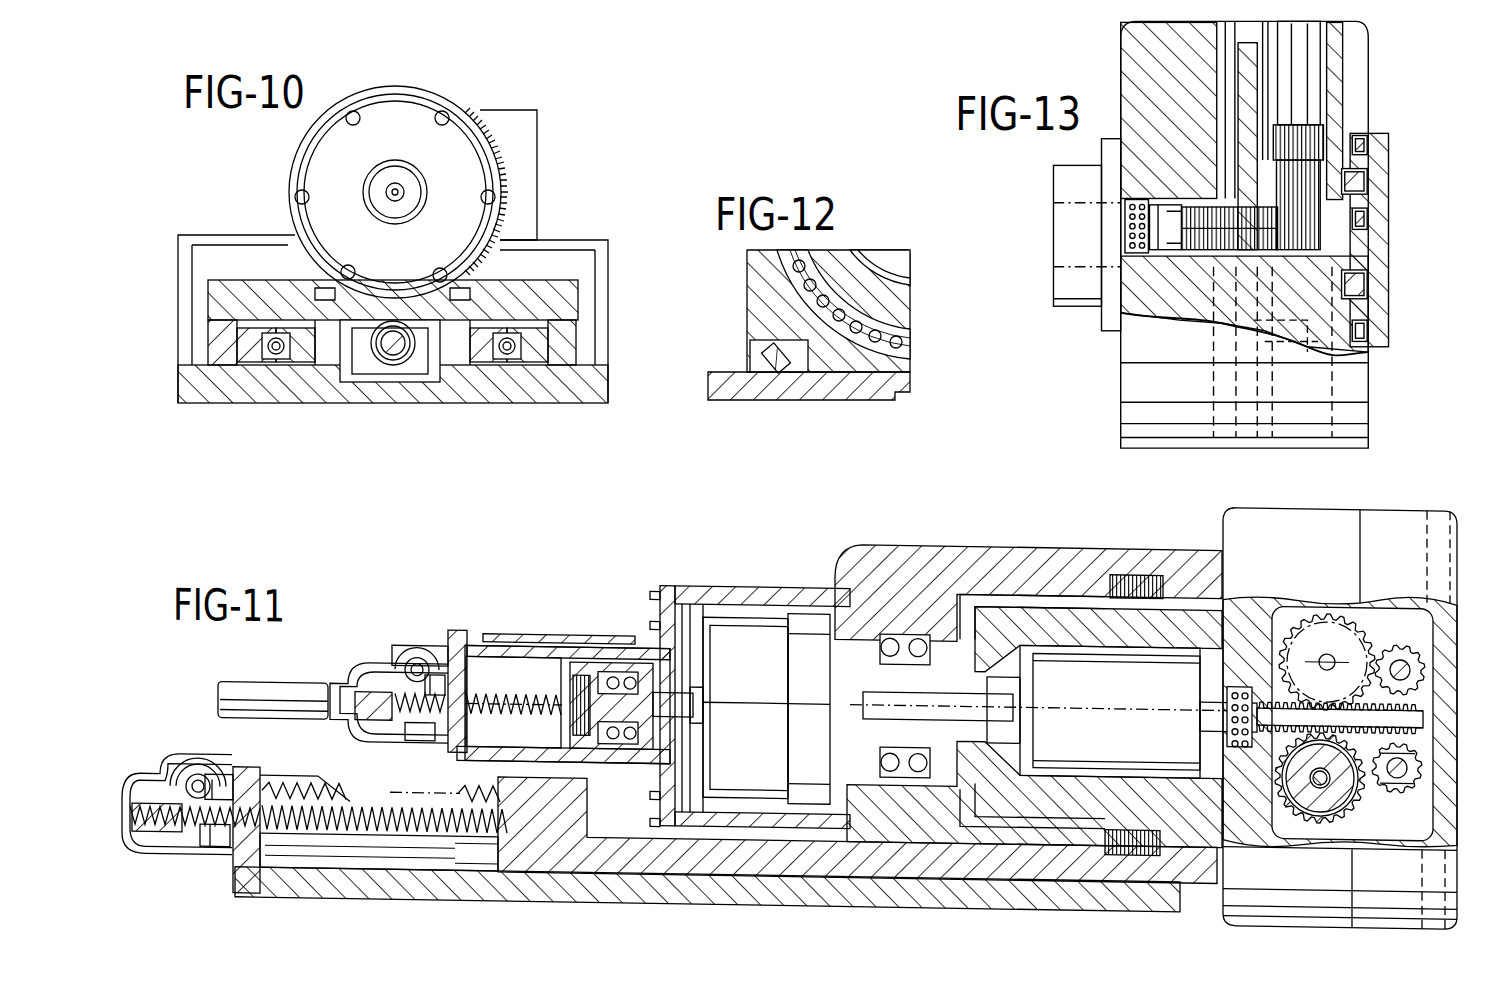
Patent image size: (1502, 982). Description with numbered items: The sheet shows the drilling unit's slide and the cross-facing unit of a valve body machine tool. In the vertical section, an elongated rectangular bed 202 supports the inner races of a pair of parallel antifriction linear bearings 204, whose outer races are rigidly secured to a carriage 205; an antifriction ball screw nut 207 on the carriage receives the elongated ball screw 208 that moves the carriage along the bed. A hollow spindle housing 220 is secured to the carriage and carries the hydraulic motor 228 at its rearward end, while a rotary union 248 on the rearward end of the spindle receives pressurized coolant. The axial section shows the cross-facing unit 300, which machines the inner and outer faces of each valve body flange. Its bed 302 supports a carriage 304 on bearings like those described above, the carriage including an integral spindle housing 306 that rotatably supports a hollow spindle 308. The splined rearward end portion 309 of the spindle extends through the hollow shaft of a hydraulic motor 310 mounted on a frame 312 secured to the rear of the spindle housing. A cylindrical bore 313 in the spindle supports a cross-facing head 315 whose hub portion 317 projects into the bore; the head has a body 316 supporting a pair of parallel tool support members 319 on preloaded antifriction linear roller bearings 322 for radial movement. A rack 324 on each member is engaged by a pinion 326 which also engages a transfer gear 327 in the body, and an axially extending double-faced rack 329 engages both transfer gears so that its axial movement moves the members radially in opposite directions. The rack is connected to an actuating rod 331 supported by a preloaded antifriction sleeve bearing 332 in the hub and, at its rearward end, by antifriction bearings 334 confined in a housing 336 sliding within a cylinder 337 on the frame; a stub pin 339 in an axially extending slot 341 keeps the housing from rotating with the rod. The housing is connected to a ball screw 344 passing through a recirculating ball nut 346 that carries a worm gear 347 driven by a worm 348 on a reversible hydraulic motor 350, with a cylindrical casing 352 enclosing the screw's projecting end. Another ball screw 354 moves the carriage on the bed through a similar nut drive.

In FIG. 10, the bed 202 is at (591, 388).
In FIG. 10, the antifriction linear bearings 204 is at (258, 362).
In FIG. 10, the carriage 205 is at (240, 292).
In FIG. 10, the antifriction ball screw nut 207 is at (355, 372).
In FIG. 10, the ball screw 208 is at (392, 366).
In FIG. 10, the spindle housing 220 is at (518, 108).
In FIG. 10, the hydraulic motor 228 is at (430, 90).
In FIG. 10, the rotary union 248 is at (387, 178).
In FIG. 11, the cross-facing unit 300 is at (1028, 676).
In FIG. 12, the bed 302 is at (795, 388).
In FIG. 11, the bed 302 is at (794, 880).
In FIG. 11, the carriage 304 is at (562, 840).
In FIG. 12, the spindle housing 306 is at (752, 307).
In FIG. 11, the spindle housing 306 is at (911, 522).
In FIG. 11, the hollow spindle 308 is at (1062, 634).
In FIG. 11, the rearward end portion 309 is at (850, 700).
In FIG. 11, the hydraulic motor 310 is at (770, 612).
In FIG. 11, the frame 312 is at (746, 580).
In FIG. 11, the cylindrical bore 313 is at (1115, 634).
In FIG. 13, the cross-facing head 315 is at (1350, 352).
In FIG. 11, the cross-facing head 315 is at (1384, 493).
In FIG. 13, the body 316 is at (1116, 349).
In FIG. 11, the body 316 is at (1304, 493).
In FIG. 13, the hub portion 317 is at (1070, 296).
In FIG. 13, the tool support members 319 is at (1366, 229).
In FIG. 13, the antifriction linear roller bearings 322 is at (1345, 134).
In FIG. 13, the rack 324 is at (1346, 167).
In FIG. 13, the pinion 326 is at (1265, 165).
In FIG. 11, the pinion 326 is at (1399, 626).
In FIG. 13, the transfer gear 327 is at (1192, 201).
In FIG. 11, the transfer gear 327 is at (1327, 598).
In FIG. 13, the double-faced rack 329 is at (1160, 236).
In FIG. 11, the double-faced rack 329 is at (1350, 692).
In FIG. 11, the actuating rod 331 is at (688, 702).
In FIG. 13, the antifriction sleeve bearing 332 is at (1120, 214).
In FIG. 11, the antifriction sleeve bearing 332 is at (1268, 737).
In FIG. 11, the antifriction bearings 334 is at (632, 668).
In FIG. 11, the housing 336 is at (590, 745).
In FIG. 11, the cylinder 337 is at (500, 758).
In FIG. 11, the stub pin 339 is at (602, 642).
In FIG. 11, the slot 341 is at (548, 630).
In FIG. 11, the ball screw 344 is at (520, 698).
In FIG. 11, the recirculating ball nut 346 is at (150, 805).
In FIG. 11, the worm gear 347 is at (208, 842).
In FIG. 11, the worm 348 is at (214, 780).
In FIG. 11, the hydraulic motor 350 is at (193, 772).
In FIG. 11, the cylindrical casing 352 is at (286, 683).
In FIG. 11, the ball screw 354 is at (386, 801).